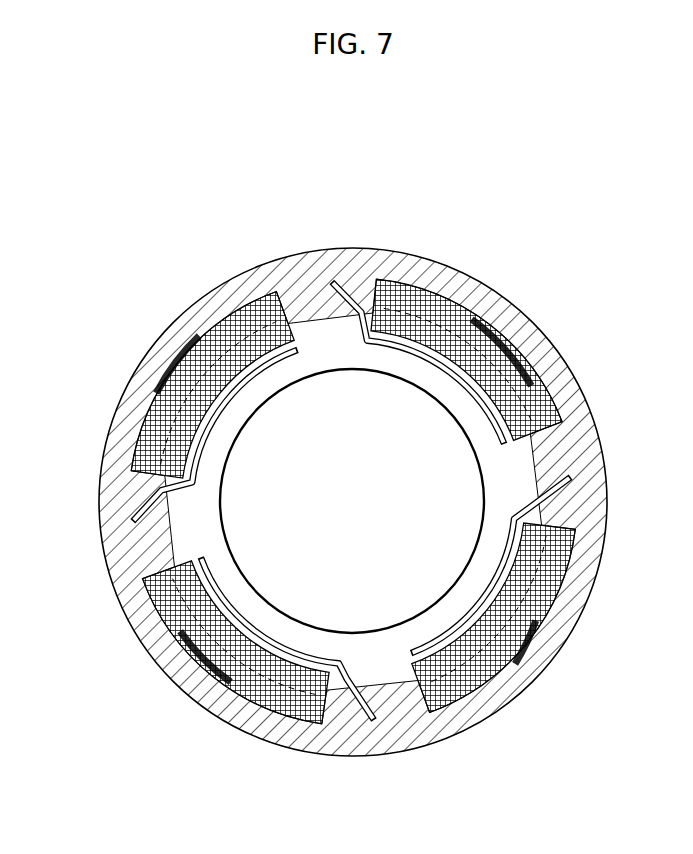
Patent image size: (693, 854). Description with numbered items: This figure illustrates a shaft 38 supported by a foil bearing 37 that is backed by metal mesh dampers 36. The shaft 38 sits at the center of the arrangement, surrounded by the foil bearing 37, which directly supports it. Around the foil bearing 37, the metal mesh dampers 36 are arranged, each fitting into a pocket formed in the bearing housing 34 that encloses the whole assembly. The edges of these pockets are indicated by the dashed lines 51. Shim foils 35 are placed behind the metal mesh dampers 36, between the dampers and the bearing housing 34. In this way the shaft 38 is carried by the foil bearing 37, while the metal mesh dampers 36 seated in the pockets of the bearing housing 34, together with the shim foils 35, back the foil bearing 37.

The bearing housing 34 is at (352, 268).
The shim foils 35 is at (508, 322).
The metal mesh dampers 36 is at (548, 373).
The foil bearing 37 is at (507, 505).
The shaft 38 is at (354, 550).
The dashed lines 51 is at (369, 303).